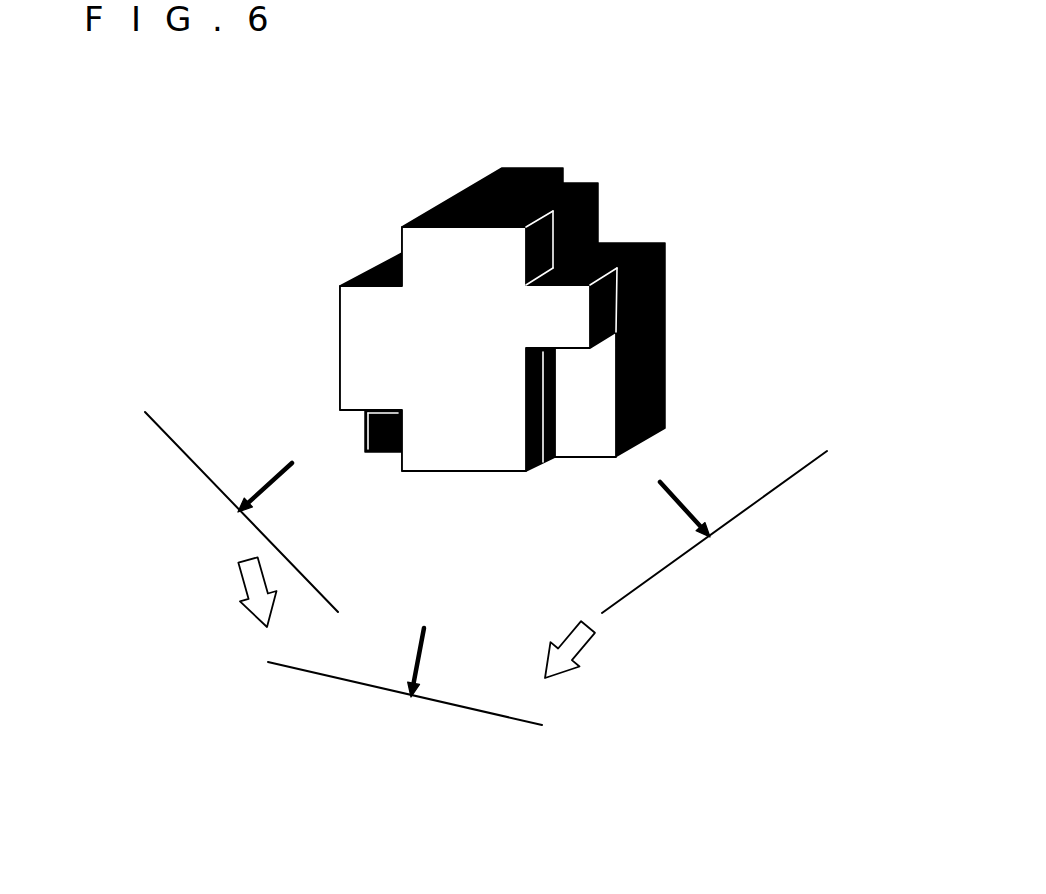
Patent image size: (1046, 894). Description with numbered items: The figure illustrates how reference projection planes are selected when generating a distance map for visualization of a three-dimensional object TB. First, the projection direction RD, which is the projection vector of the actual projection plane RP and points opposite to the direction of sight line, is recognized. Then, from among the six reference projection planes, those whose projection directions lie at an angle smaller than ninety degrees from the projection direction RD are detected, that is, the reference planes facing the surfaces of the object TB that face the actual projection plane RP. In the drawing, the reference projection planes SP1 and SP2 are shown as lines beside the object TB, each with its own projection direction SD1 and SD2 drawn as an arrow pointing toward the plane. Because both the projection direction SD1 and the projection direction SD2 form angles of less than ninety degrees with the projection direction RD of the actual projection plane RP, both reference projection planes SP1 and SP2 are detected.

The target block TB is at (613, 161).
The reference projection plane SP1 is at (191, 459).
The projection direction SD1 is at (268, 488).
The reference projection plane SP2 is at (667, 567).
The projection direction SD2 is at (680, 508).
The projection direction RD is at (425, 647).
The actual projection plane RP is at (443, 702).